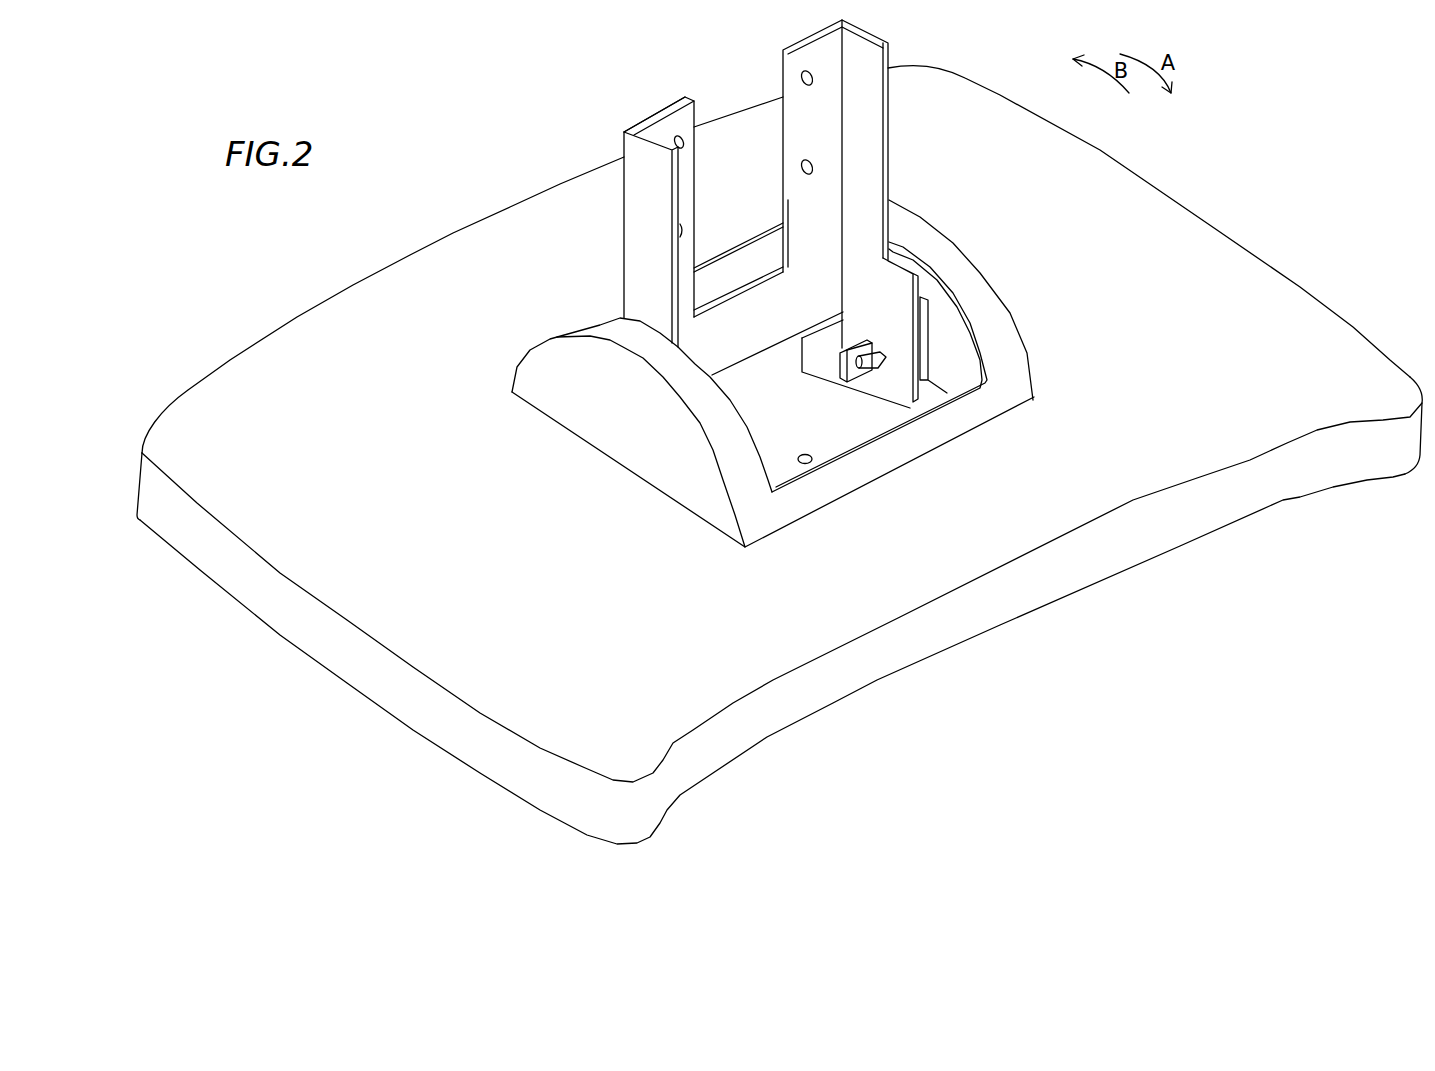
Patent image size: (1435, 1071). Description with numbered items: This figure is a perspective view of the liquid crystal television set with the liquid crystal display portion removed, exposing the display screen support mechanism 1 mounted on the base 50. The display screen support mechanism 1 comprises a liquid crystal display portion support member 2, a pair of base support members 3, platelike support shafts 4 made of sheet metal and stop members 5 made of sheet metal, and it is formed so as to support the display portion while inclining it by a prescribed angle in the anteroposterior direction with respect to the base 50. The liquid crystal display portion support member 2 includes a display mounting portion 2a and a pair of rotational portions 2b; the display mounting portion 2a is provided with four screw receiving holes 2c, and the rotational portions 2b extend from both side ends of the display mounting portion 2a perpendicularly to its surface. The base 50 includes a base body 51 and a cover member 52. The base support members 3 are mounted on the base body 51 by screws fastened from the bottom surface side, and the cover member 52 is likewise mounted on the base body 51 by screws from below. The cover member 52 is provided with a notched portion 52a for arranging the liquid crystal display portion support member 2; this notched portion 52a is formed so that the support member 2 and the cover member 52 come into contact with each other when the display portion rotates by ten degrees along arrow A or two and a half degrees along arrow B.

The display screen support mechanism 1 is at (937, 373).
The liquid crystal display portion support member 2 is at (733, 211).
The display mounting portion 2a is at (680, 113).
The rotational portions 2b is at (641, 180).
The screw receiving holes 2c is at (804, 72).
The base support members 3 is at (825, 367).
The platelike support shafts 4 is at (850, 378).
The stop members 5 is at (873, 360).
The base 50 is at (1303, 342).
The base body 51 is at (770, 427).
The cover member 52 is at (1185, 240).
The notched portion 52a is at (800, 467).